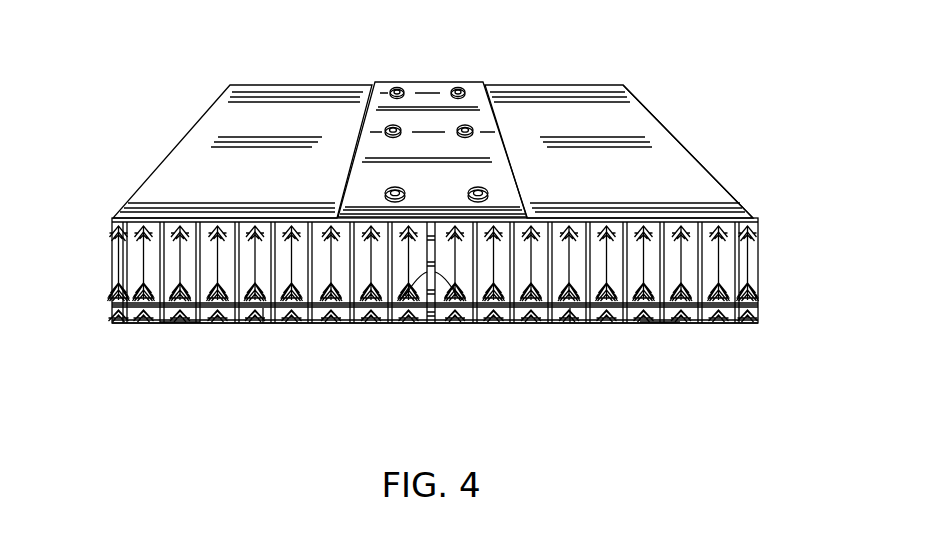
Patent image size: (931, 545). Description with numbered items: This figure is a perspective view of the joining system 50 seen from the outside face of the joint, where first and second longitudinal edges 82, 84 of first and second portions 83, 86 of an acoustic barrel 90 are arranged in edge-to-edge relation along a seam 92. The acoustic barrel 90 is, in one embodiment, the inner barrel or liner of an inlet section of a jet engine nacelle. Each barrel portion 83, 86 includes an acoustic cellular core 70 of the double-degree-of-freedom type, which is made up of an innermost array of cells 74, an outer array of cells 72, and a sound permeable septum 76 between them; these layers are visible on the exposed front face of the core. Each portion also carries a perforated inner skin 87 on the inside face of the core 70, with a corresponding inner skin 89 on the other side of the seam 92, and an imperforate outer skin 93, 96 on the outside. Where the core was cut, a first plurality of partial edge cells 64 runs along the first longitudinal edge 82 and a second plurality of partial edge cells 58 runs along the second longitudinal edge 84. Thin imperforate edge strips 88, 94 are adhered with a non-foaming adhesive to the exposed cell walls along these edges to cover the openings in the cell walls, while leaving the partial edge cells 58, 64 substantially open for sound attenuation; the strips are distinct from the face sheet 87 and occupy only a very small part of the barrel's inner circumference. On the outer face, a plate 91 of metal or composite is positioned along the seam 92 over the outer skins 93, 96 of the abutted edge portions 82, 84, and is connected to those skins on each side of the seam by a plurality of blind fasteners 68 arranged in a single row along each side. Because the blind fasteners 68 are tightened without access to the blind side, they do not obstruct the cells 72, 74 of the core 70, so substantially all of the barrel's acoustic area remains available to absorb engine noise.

The joining system 50 is at (707, 40).
The second plurality of partial edge cells 58 is at (470, 325).
The first plurality of partial edge cells 64 is at (400, 325).
The blind fasteners 68 is at (393, 80).
The acoustic cellular core 70 is at (137, 262).
The outer array of cells 72 is at (725, 258).
The innermost array of cells 74 is at (743, 322).
The sound permeable septum 76 is at (740, 300).
The first longitudinal edge 82 is at (348, 85).
The first portion of acoustic barrel 83 is at (182, 325).
The second longitudinal edge 84 is at (511, 83).
The second portion of acoustic barrel 86 is at (662, 325).
The perforated inner skin 87 is at (265, 327).
The edge strip 88 is at (395, 325).
The inner skin 89 is at (570, 325).
The acoustic barrel 90 is at (675, 131).
The plate 91 is at (441, 82).
The seam 92 is at (430, 325).
The imperforate outer skin 93 is at (273, 85).
The edge strip 94 is at (467, 325).
The outer skin 96 is at (586, 83).